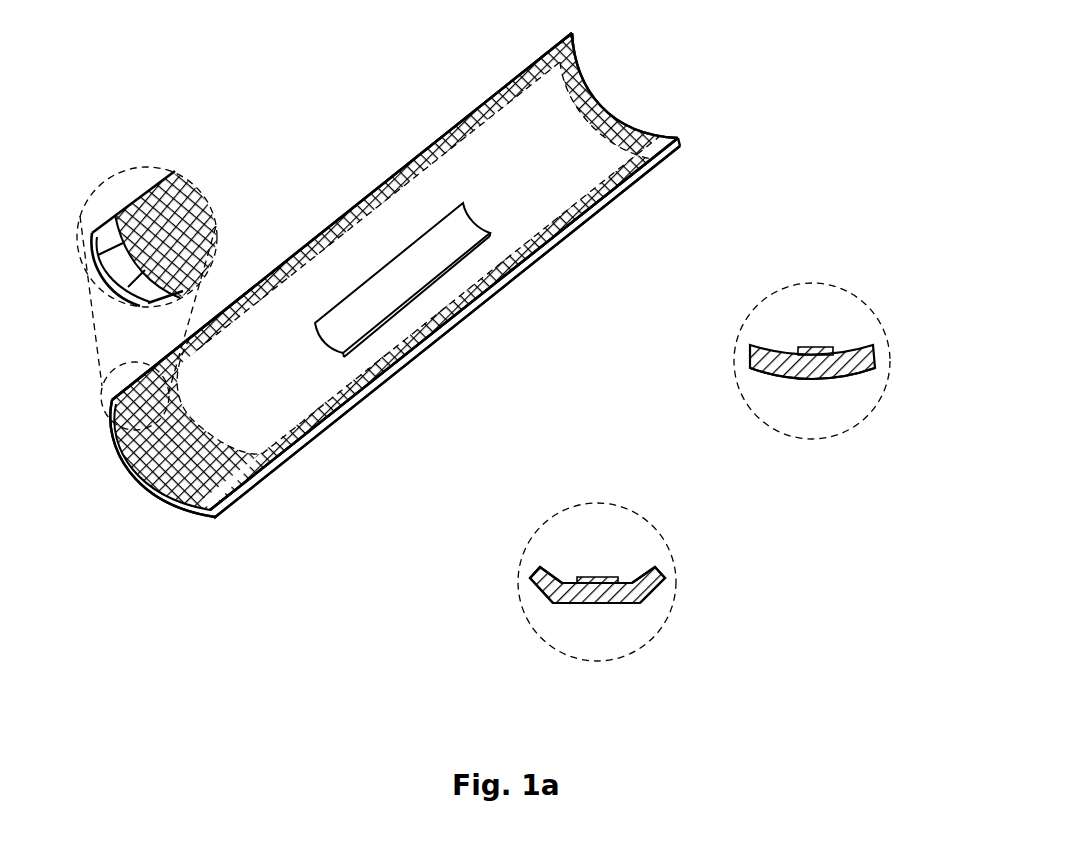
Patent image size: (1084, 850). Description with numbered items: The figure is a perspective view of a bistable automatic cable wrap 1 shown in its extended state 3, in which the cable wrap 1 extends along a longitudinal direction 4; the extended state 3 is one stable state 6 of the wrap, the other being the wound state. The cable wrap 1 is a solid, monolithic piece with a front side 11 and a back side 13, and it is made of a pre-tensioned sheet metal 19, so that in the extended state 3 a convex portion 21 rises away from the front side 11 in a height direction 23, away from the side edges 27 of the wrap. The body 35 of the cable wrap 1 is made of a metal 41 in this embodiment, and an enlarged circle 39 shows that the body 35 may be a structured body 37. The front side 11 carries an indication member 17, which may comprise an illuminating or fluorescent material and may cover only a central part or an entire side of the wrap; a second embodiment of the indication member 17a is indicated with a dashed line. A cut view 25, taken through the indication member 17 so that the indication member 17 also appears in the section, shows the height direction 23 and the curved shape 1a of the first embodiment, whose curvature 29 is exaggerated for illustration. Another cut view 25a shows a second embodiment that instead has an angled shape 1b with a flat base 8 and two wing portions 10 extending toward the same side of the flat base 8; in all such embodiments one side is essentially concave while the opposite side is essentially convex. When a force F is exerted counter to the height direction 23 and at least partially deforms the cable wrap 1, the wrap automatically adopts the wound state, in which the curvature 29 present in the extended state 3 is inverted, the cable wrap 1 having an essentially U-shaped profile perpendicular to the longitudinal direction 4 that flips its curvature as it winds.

The bistable automatic cable wrap 1 is at (328, 127).
The curved shape 1a is at (857, 336).
The angled shape 1b is at (597, 616).
The extended state 3 is at (342, 216).
The longitudinal direction 4 is at (536, 278).
The stable state 6 is at (322, 172).
The flat base 8 is at (583, 604).
The wing portions 10 is at (541, 591).
The front side 11 is at (586, 148).
The back side 13 is at (627, 203).
The indication member 17 is at (430, 282).
The indication member (second embodiment) 17a is at (413, 163).
The sheet metal 19 is at (542, 62).
The convex portion 21 is at (140, 489).
The height direction 23 is at (812, 400).
The cut view 25 is at (742, 327).
The cut view (second embodiment) 25a is at (530, 540).
The side edges 27 is at (384, 374).
The curvature 29 is at (631, 112).
The body 35 is at (507, 117).
The structured body 37 is at (146, 210).
The circle 39 is at (218, 227).
The metal 41 is at (418, 295).
The force F is at (200, 530).